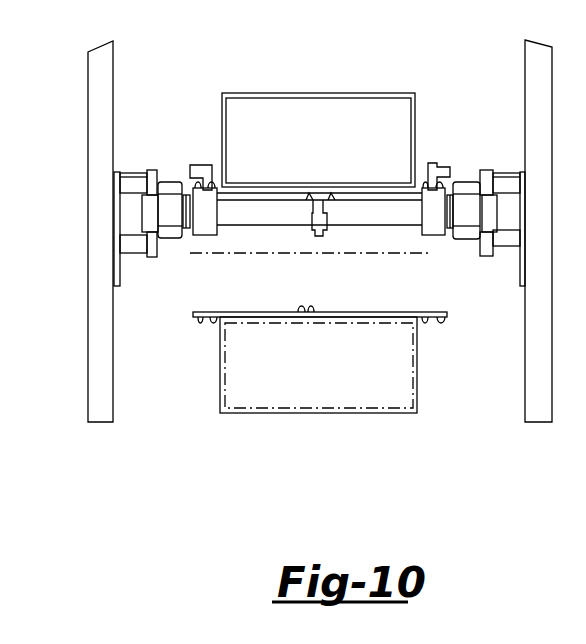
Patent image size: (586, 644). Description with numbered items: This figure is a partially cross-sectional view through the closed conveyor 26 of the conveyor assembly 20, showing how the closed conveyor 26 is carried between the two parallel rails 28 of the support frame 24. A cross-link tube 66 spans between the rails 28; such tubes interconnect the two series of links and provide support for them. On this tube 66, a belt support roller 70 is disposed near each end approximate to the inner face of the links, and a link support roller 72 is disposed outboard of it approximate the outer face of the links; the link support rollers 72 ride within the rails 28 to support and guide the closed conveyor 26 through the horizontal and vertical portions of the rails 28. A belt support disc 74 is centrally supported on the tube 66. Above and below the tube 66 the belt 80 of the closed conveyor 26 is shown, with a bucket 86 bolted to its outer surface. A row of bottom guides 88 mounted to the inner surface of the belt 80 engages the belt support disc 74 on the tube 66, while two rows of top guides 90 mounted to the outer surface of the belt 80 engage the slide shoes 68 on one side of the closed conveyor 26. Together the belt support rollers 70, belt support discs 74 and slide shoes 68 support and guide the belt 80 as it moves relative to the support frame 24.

The conveyor assembly 20 is at (193, 425).
The support frame 24 is at (100, 75).
The closed conveyor 26 is at (182, 177).
The rail 28 is at (153, 254).
The cross-link tube 66 is at (243, 212).
The slide shoe 68 is at (193, 165).
The belt support roller 70 is at (205, 236).
The link support roller 72 is at (150, 212).
The belt support disc 74 is at (324, 232).
The belt 80 is at (365, 313).
The bucket 86 is at (340, 395).
The bottom guide 88 is at (333, 192).
The top guide 90 is at (426, 181).